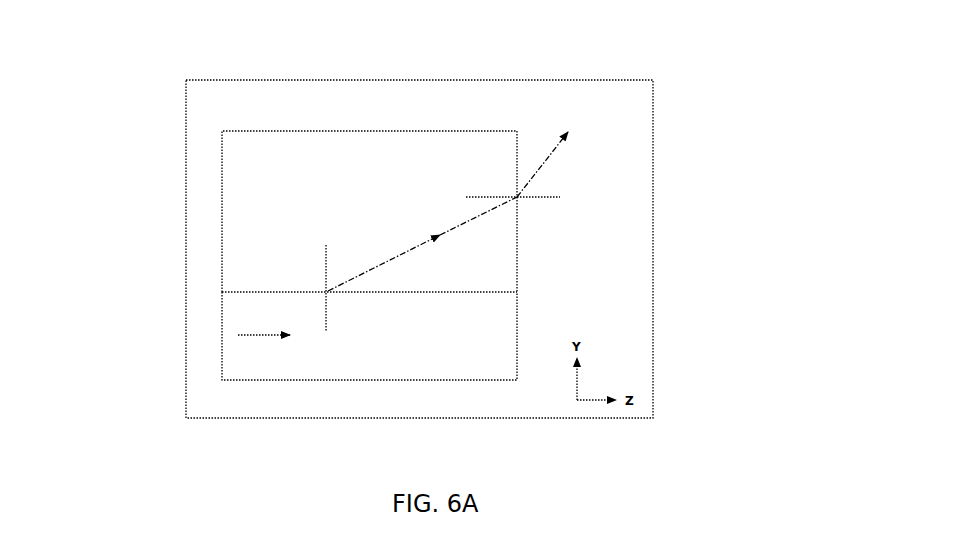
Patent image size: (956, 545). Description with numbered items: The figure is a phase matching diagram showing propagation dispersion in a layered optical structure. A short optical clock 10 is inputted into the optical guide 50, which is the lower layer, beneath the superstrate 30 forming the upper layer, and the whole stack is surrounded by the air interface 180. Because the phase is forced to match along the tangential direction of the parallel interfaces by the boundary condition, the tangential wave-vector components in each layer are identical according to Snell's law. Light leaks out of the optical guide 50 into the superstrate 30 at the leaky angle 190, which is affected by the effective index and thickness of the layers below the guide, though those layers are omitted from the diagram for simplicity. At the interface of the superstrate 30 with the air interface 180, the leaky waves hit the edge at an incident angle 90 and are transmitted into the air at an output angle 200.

The short optical clock 10 is at (238, 335).
The superstrate 30 is at (240, 172).
The optical guide 50 is at (453, 363).
The incident angle θi 90 is at (420, 244).
The air interface 180 is at (623, 257).
The leaky angle θleak 190 is at (326, 290).
The output angle θo 200 is at (540, 188).